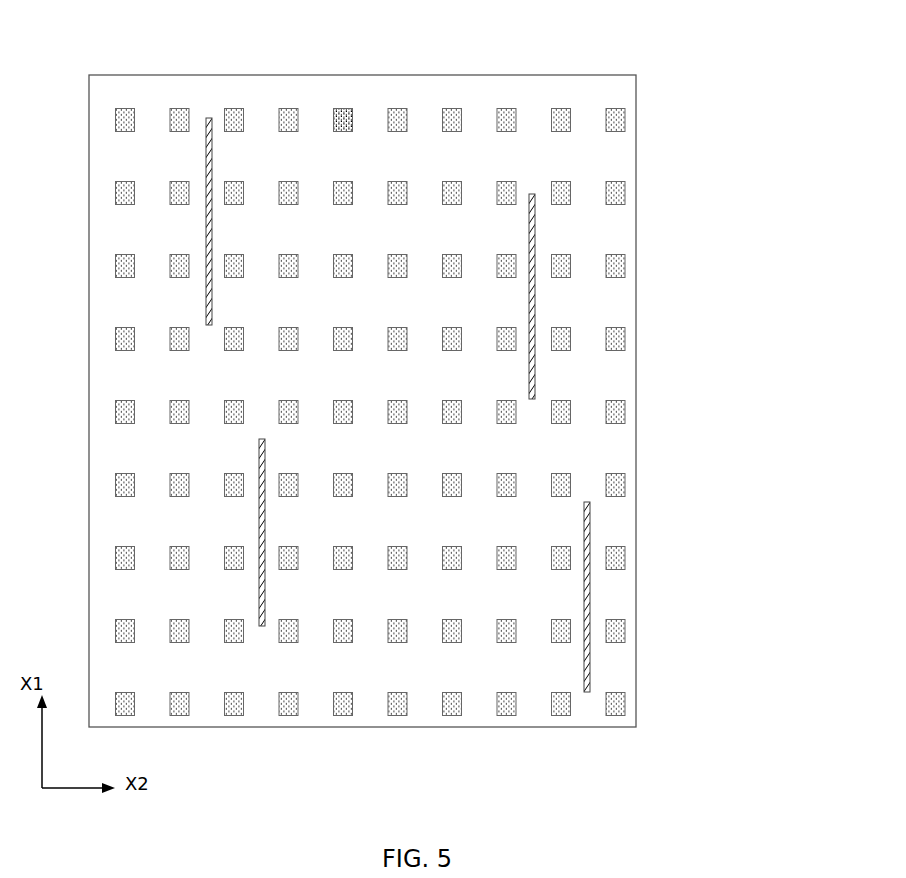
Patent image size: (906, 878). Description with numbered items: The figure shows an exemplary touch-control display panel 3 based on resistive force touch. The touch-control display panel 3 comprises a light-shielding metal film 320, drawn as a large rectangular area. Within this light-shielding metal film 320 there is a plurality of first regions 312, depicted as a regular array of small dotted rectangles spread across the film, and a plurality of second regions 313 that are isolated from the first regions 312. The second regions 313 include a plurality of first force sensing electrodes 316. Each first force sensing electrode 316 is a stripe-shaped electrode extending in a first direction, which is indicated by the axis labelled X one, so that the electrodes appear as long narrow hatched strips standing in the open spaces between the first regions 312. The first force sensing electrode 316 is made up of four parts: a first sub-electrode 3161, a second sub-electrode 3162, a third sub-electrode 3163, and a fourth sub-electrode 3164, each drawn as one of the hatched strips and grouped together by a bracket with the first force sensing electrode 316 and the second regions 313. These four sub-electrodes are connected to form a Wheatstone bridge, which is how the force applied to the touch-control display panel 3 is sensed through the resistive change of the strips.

The touch-control display panel 3 is at (130, 50).
The first regions 312 is at (337, 124).
The light-shielding metal film 320 is at (548, 93).
The first force sensing electrode 316 is at (508, 395).
The second regions 313 is at (508, 395).
The first sub-electrode 3161 is at (210, 165).
The second sub-electrode 3162 is at (532, 240).
The third sub-electrode 3163 is at (260, 473).
The fourth sub-electrode 3164 is at (658, 596).